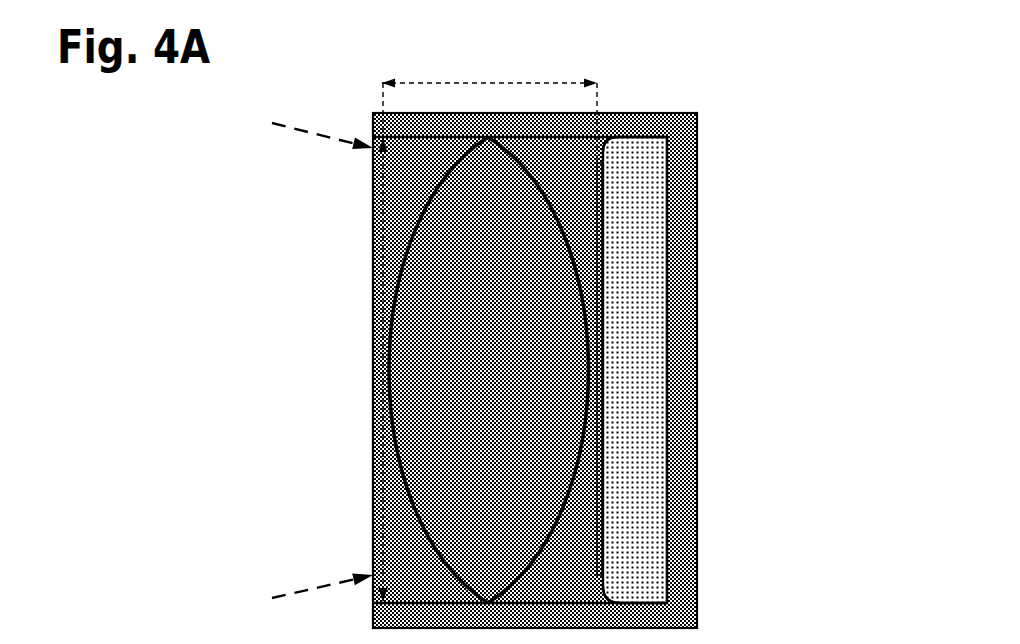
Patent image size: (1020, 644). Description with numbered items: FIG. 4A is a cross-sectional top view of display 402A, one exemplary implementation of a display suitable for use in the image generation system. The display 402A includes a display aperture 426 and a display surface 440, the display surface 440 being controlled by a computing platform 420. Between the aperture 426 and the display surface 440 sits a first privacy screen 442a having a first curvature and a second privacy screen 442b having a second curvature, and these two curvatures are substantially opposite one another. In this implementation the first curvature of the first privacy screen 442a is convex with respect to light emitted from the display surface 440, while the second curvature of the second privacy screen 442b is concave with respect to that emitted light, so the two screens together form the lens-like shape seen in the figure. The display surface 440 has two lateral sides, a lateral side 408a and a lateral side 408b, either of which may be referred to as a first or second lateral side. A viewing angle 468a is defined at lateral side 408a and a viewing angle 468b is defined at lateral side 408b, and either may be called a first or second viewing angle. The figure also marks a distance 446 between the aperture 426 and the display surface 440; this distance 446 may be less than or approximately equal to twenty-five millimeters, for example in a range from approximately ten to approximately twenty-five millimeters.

The display 402A is at (779, 79).
The display aperture 426 is at (376, 507).
The first privacy screen 442a is at (582, 299).
The second privacy screen 442b is at (394, 447).
The computing platform 420 is at (654, 571).
The display surface 440 is at (610, 416).
The lateral side 408a is at (637, 158).
The lateral side 408b is at (650, 590).
The distance 446 is at (494, 80).
The viewing angle 468a is at (302, 133).
The viewing angle 468b is at (272, 598).